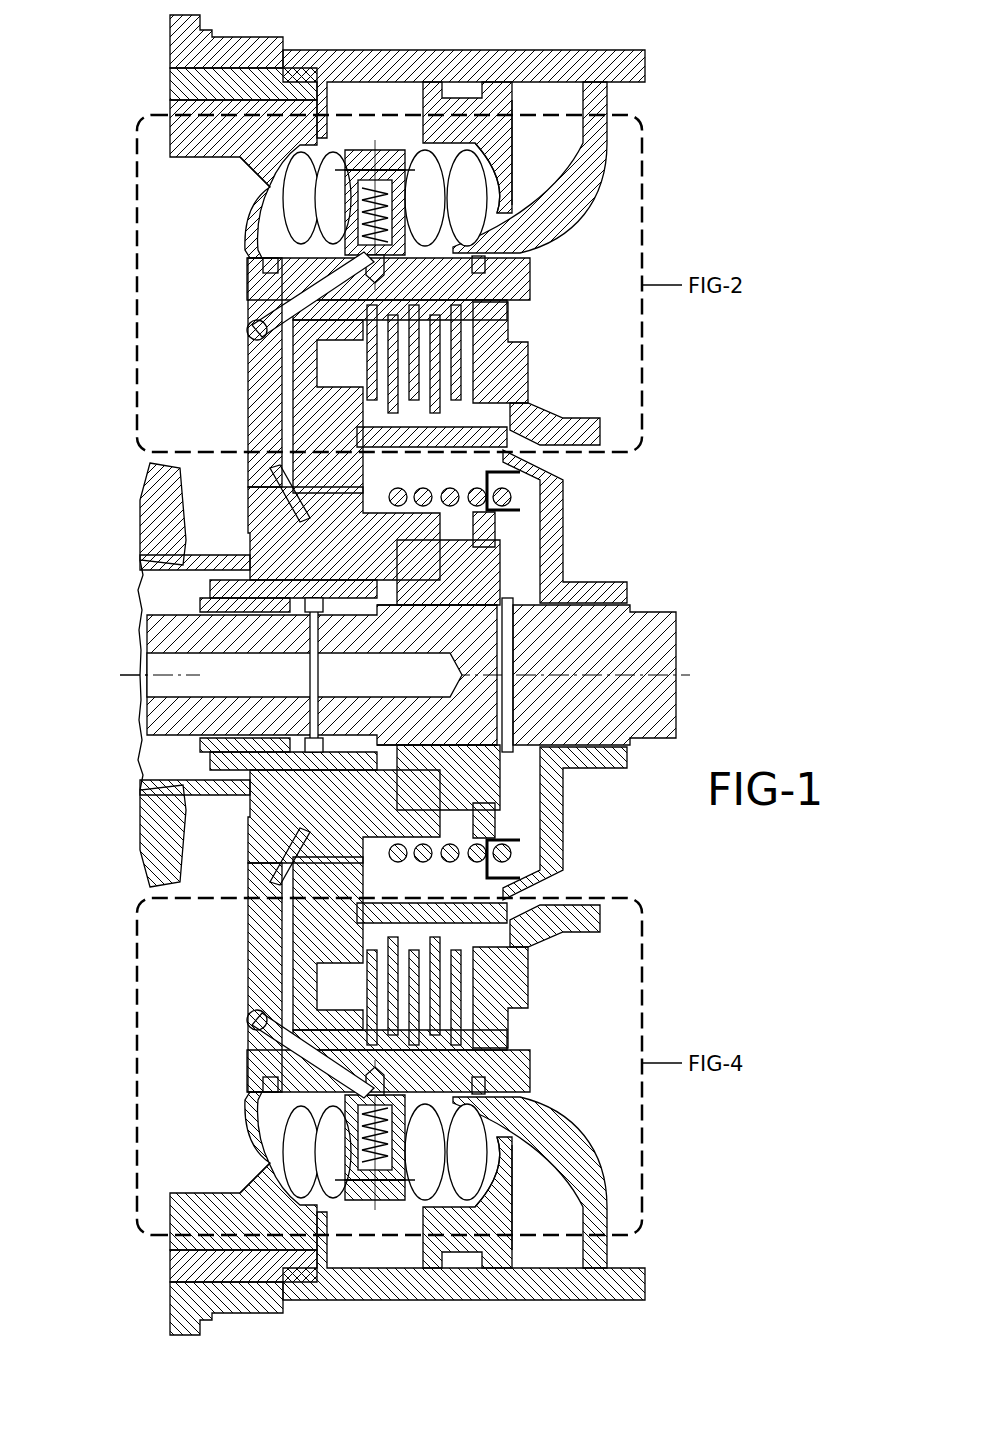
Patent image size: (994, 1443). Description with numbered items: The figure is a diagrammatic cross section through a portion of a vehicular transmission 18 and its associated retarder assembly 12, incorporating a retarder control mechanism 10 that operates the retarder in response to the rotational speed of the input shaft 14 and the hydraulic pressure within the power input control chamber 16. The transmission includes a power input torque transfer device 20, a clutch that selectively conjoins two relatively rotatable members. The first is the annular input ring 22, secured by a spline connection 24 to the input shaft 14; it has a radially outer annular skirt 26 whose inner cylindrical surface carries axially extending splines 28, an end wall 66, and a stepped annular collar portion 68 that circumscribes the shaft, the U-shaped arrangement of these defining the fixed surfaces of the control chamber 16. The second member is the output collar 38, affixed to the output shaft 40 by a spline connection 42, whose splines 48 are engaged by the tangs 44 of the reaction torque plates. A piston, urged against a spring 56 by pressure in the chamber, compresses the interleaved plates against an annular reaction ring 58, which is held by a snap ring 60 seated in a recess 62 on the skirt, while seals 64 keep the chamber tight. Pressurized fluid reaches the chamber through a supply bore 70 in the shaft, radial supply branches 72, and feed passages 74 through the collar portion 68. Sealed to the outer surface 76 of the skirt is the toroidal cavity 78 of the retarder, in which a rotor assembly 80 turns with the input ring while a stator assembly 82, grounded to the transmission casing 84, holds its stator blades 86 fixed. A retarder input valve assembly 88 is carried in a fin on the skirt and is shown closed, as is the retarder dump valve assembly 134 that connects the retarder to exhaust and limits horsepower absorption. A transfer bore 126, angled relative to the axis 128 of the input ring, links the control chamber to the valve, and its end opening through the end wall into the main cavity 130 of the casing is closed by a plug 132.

The retarder control mechanism 10 is at (660, 92).
The retarder assembly 12 is at (527, 162).
The input shaft 14 is at (170, 622).
The power input control chamber 16 is at (292, 388).
The vehicular transmission 18 is at (604, 433).
The power input torque transfer device 20 is at (534, 340).
The annular input ring 22 is at (253, 268).
The spline connection 24 is at (495, 530).
The radially outer annular skirt 26 is at (528, 250).
The axially extending splines 28 is at (525, 292).
The output collar 38 is at (566, 515).
The output shaft 40 is at (665, 648).
The spline connection 42 is at (512, 600).
The tangs 44 is at (470, 420).
The axially extending splines 48 is at (500, 425).
The spring 56 is at (505, 495).
The annular reaction ring 58 is at (508, 380).
The snap ring 60 is at (512, 302).
The recess 62 is at (485, 270).
The seals 64 is at (300, 302).
The end wall 66 is at (262, 405).
The stepped annular collar portion 68 is at (430, 620).
The supply bore 70 is at (175, 672).
The radial supply branches 72 is at (322, 630).
The feed passages 74 is at (300, 575).
The outer surface 76 is at (258, 250).
The toroidal cavity 78 is at (313, 165).
The rotor assembly 80 is at (420, 165).
The stator assembly 82 is at (497, 216).
The transmission casing 84 is at (545, 70).
The stator blades 86 is at (470, 195).
The retarder input valve assembly 88 is at (372, 150).
The transfer bore 126 is at (305, 320).
The axis 128 is at (125, 670).
The main cavity 130 is at (190, 337).
The plug 132 is at (250, 325).
The retarder dump valve assembly 134 is at (372, 1200).